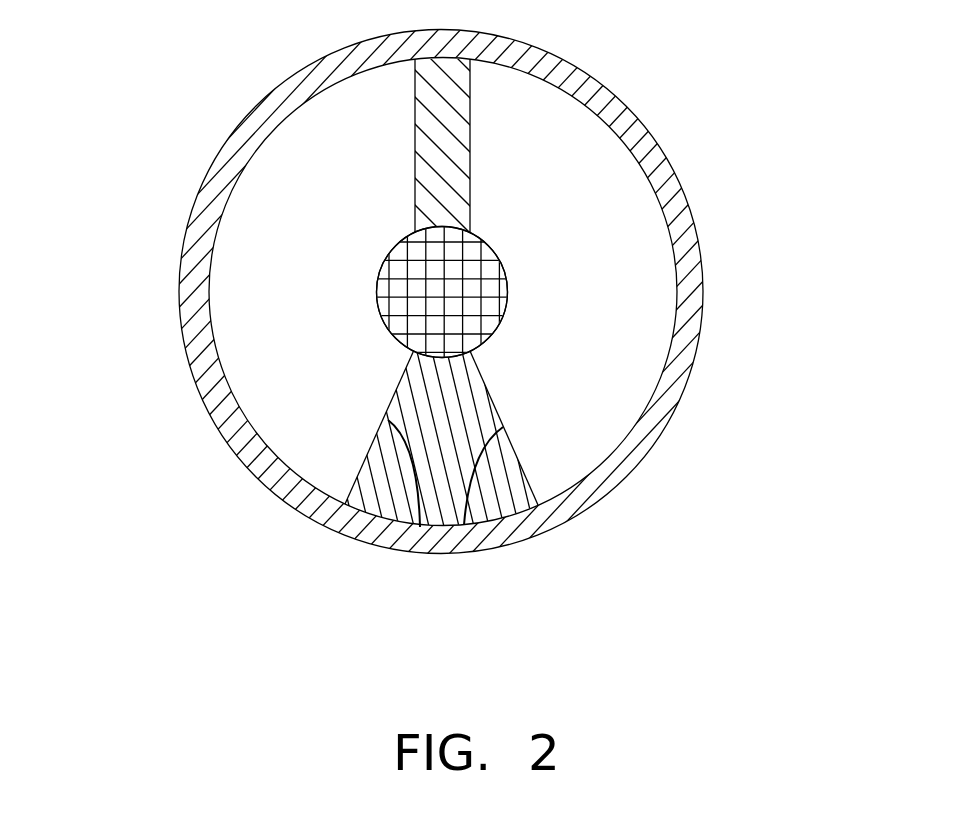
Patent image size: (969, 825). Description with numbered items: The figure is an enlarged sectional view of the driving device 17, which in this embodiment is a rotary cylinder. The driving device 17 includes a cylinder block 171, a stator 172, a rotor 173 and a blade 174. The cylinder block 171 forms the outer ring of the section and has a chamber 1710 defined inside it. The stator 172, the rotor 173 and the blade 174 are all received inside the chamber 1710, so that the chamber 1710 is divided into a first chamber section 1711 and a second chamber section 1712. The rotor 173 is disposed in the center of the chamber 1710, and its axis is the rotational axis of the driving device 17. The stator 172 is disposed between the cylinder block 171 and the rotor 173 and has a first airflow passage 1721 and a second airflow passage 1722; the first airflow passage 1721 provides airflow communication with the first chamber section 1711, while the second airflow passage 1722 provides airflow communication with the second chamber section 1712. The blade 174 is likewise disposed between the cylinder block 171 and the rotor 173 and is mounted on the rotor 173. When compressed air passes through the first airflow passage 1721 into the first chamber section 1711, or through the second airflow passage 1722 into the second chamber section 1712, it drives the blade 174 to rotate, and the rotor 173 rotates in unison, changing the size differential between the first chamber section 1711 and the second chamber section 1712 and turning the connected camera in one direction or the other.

The driving device 17 is at (435, 409).
The cylinder block 171 is at (660, 173).
The stator 172 is at (524, 453).
The first airflow passage 1721 is at (415, 492).
The second airflow passage 1722 is at (470, 496).
The rotor 173 is at (492, 286).
The blade 174 is at (453, 150).
The chamber 1710 is at (351, 170).
The first chamber section 1711 is at (318, 132).
The second chamber section 1712 is at (490, 207).